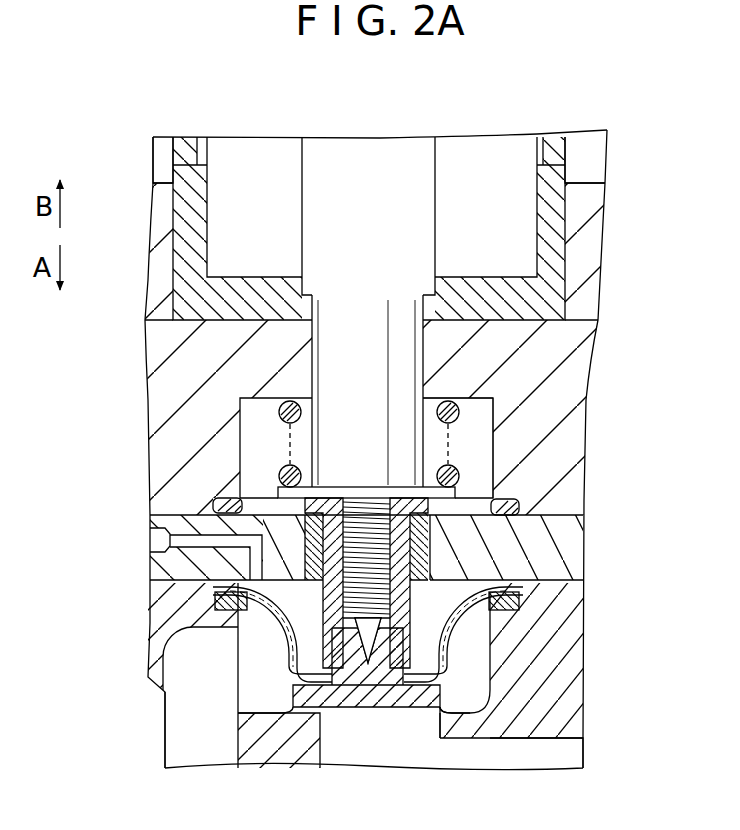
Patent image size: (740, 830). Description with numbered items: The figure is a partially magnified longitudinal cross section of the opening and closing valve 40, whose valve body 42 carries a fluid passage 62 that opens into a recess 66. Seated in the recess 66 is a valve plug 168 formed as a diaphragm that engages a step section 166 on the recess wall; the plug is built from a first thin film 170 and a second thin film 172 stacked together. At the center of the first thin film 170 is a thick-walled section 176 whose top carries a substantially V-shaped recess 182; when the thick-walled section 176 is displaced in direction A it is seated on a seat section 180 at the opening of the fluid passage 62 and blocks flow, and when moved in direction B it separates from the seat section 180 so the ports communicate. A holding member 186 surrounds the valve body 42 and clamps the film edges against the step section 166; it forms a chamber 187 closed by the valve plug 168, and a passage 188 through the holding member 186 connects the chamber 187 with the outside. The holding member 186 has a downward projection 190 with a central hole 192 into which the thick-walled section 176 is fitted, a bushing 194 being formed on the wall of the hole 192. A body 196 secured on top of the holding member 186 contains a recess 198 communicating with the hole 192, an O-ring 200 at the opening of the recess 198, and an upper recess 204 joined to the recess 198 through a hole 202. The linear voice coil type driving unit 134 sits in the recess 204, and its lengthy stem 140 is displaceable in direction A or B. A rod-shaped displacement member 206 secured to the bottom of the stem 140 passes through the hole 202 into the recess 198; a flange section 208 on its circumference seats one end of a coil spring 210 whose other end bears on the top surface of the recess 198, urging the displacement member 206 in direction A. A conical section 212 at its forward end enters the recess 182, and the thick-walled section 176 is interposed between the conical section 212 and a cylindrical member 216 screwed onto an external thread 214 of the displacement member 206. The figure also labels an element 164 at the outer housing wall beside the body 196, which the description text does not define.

The opening and closing valve 40 is at (614, 116).
The linear voice coil type driving unit 134 is at (580, 171).
The recess 204 is at (560, 217).
The actuator housing 164 is at (610, 272).
The stem 140 is at (368, 165).
The displacement member 206 is at (338, 367).
The hole 202 is at (415, 360).
The body 196 is at (578, 366).
The recess 198 is at (488, 422).
The coil spring 210 is at (278, 410).
The flange section 208 is at (280, 474).
The cylindrical member 216 is at (280, 492).
The O-ring 200 is at (500, 487).
The bushing 194 is at (518, 511).
The holding member 186 is at (573, 550).
The passage 188 is at (160, 543).
The external thread 214 is at (258, 545).
The chamber 187 is at (236, 588).
The valve body 42 is at (160, 616).
The step section 166 is at (228, 590).
The hole 192 is at (524, 590).
The second thin film 172 is at (446, 640).
The projection 190 is at (518, 612).
The first thin film 170 is at (476, 650).
The fluid passage 62 is at (212, 738).
The recess 66 is at (268, 692).
The seat section 180 is at (320, 690).
The conical section 212 is at (362, 665).
The recess 182 is at (366, 690).
The thick-walled section 176 is at (398, 692).
The valve plug 168 is at (404, 716).